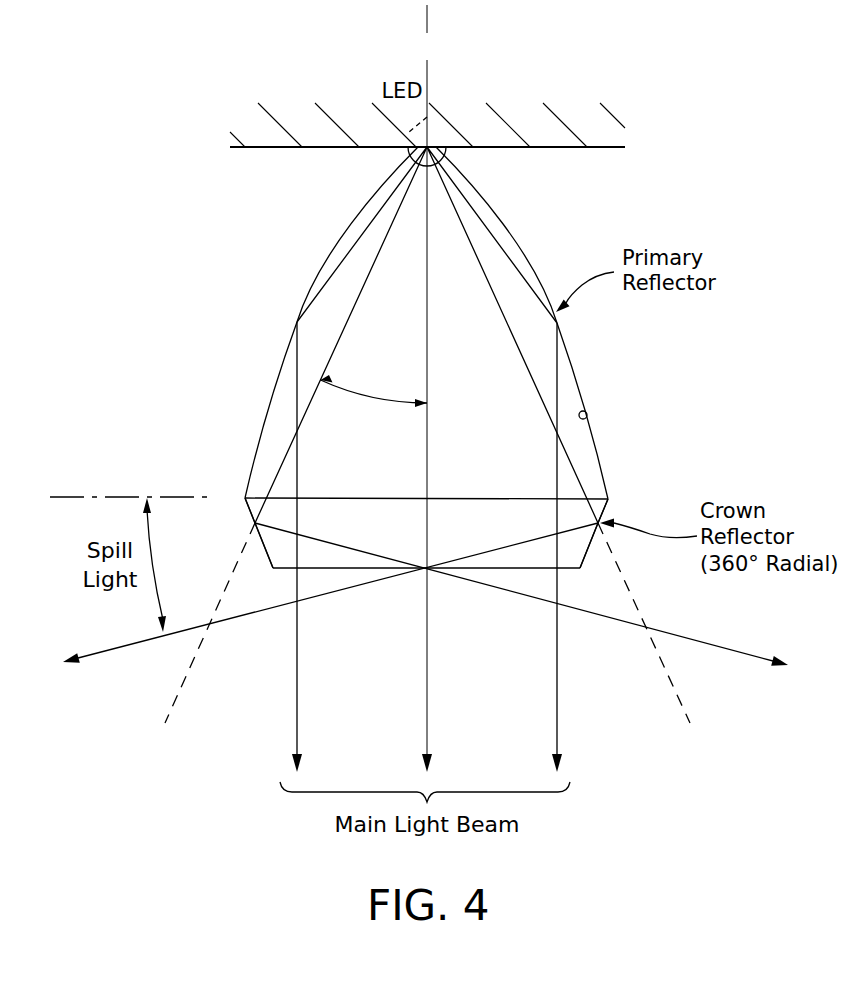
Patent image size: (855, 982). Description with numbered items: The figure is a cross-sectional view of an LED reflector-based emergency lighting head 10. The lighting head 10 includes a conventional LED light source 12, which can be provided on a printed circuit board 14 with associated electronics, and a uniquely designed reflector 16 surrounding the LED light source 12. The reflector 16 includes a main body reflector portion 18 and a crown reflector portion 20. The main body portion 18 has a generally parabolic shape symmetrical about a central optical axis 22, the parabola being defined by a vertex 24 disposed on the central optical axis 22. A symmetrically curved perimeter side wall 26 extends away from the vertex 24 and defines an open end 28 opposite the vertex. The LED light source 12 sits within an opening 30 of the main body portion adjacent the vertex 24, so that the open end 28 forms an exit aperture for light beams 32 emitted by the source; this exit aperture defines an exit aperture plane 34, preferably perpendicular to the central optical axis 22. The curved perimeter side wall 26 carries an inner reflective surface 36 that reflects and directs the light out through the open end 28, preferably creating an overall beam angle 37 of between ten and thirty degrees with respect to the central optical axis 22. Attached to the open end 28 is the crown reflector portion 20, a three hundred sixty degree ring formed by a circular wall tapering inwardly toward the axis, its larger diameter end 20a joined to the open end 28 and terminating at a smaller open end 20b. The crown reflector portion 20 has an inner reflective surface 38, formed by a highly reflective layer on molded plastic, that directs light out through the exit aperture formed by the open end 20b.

The emergency lighting head 10 is at (766, 233).
The LED light source 12 is at (450, 156).
The printed circuit board 14 is at (607, 147).
The reflector 16 is at (342, 229).
The main body reflector portion 18 is at (514, 232).
The crown reflector portion 20 is at (605, 515).
The larger diameter end 20a is at (603, 510).
The open end of crown reflector portion 20b is at (582, 568).
The central optical axis 22 is at (427, 43).
The vertex 24 is at (429, 115).
The curved perimeter side wall 26 is at (298, 316).
The open end of main body portion 28 is at (245, 501).
The opening 30 is at (395, 149).
The light beams 32 is at (557, 673).
The exit aperture plane 34 is at (112, 493).
The inner reflective surface of main body portion 36 is at (587, 415).
The overall beam angle 37 is at (367, 391).
The inner reflective surface of crown reflector portion 38 is at (273, 570).